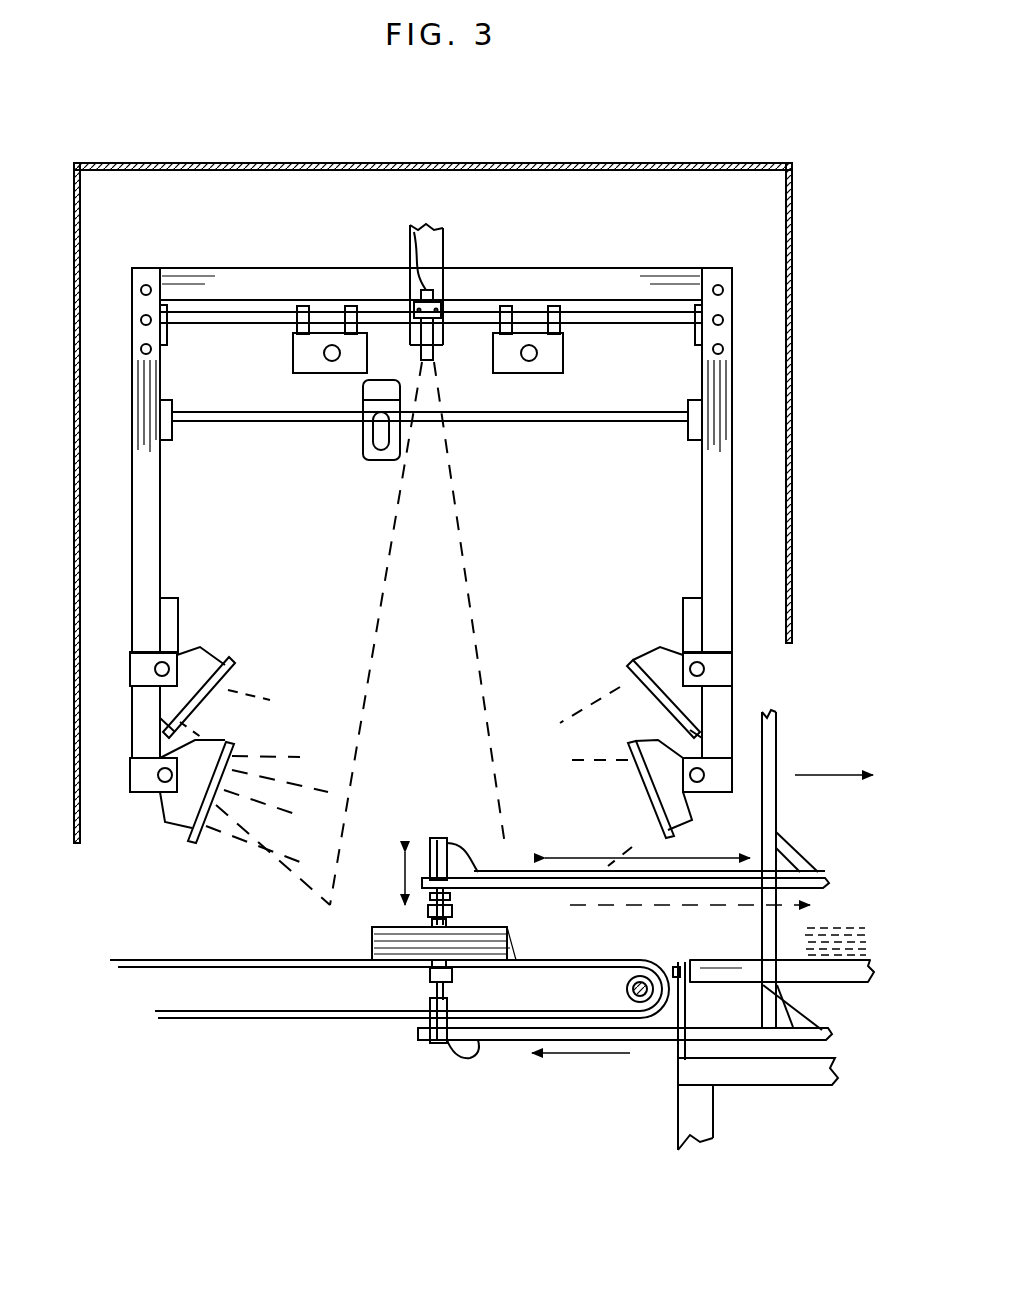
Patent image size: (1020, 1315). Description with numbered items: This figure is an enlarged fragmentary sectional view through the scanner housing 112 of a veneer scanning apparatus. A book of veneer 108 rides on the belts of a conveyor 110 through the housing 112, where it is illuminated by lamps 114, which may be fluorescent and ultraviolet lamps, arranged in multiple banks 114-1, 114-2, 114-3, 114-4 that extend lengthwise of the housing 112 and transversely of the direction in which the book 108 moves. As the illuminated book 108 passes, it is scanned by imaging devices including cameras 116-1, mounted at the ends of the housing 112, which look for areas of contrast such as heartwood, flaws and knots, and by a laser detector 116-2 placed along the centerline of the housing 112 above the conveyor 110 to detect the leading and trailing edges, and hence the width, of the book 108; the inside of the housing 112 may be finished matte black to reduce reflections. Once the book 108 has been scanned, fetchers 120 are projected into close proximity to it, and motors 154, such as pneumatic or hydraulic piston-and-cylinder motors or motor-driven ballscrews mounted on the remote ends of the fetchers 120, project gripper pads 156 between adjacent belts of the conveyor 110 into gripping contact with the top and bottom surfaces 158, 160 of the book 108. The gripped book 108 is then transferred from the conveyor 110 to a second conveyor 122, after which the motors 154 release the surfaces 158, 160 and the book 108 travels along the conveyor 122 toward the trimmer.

The scanner housing 112 is at (702, 150).
The camera 116-1 is at (327, 300).
The laser detector 116-2 is at (449, 296).
The lamps 114 is at (431, 735).
The bank of lamps 114-1 is at (266, 823).
The bank of lamps 114-2 is at (648, 806).
The bank of lamps 114-3 is at (226, 690).
The bank of lamps 114-4 is at (648, 655).
The conveyor 110 is at (165, 957).
The fetcher 120 is at (576, 1030).
The motor 154 is at (432, 850).
The gripper pad 156 is at (428, 916).
The top surface 158 is at (484, 925).
The bottom surface 160 is at (478, 962).
The book of veneer 108 is at (366, 937).
The conveyor 122 is at (775, 988).